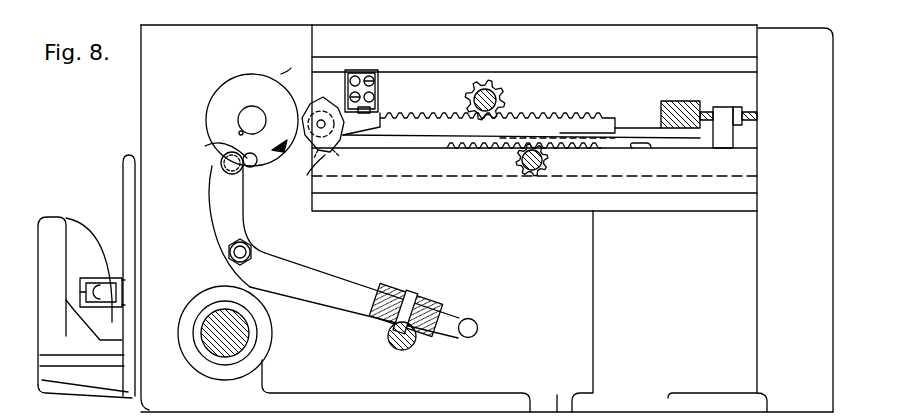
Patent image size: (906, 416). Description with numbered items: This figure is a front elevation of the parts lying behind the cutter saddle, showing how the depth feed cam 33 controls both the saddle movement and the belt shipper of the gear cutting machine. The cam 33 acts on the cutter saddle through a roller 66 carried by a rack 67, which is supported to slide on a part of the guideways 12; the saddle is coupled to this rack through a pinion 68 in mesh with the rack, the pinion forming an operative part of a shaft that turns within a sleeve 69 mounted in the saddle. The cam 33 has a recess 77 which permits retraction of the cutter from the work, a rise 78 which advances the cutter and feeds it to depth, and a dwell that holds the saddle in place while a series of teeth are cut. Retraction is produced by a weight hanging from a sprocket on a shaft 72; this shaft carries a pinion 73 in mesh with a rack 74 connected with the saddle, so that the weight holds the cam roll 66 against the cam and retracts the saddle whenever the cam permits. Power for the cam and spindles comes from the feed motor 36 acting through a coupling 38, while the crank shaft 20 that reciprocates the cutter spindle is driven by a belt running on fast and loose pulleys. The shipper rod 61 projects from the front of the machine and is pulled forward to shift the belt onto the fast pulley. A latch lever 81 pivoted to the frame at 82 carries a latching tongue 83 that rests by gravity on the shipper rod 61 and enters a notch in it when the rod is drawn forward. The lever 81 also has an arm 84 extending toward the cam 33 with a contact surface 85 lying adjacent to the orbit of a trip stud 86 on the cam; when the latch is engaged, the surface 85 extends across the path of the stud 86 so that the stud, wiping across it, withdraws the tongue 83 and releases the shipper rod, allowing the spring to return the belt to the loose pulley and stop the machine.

The guideways 12 is at (697, 193).
The crank shaft 20 is at (206, 344).
The depth feed cam 33 is at (224, 90).
The feed motor 36 is at (58, 218).
The coupling 38 is at (88, 278).
The shipper rod 61 is at (398, 350).
The roller 66 is at (302, 163).
The rack 67 is at (554, 116).
The pinion 68 is at (501, 92).
The sleeve 69 is at (468, 92).
The shaft 72 is at (548, 160).
The pinion 73 is at (515, 156).
The rack 74 is at (604, 140).
The recess 77 is at (315, 102).
The rise 78 is at (281, 74).
The latch lever 81 is at (346, 284).
The pivot 82 is at (252, 248).
The latching tongue 83 is at (410, 295).
The arm 84 is at (209, 192).
The contact surface 85 is at (221, 163).
The trip stud 86 is at (206, 146).